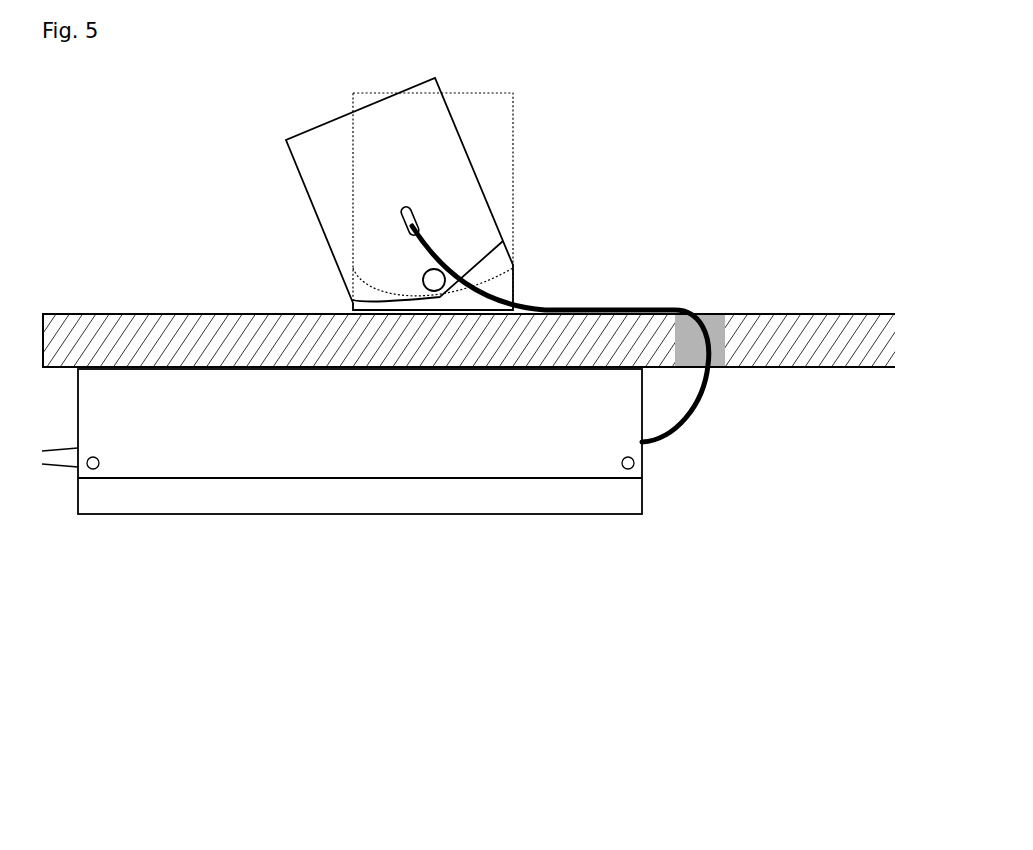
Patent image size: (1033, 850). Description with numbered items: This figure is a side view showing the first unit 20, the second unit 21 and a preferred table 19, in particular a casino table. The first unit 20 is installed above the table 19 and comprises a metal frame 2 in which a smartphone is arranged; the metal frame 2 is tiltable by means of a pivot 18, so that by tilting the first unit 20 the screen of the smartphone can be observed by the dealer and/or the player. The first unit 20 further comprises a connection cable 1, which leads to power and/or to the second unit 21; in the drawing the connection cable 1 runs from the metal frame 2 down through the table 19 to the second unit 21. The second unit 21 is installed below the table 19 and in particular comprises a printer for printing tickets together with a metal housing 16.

The connection cable 1 is at (527, 300).
The metal frame 2 is at (305, 180).
The metal housing 16 is at (567, 513).
The pivot 18 is at (422, 280).
The table 19 is at (780, 367).
The first unit 20 is at (700, 84).
The second unit 21 is at (79, 675).